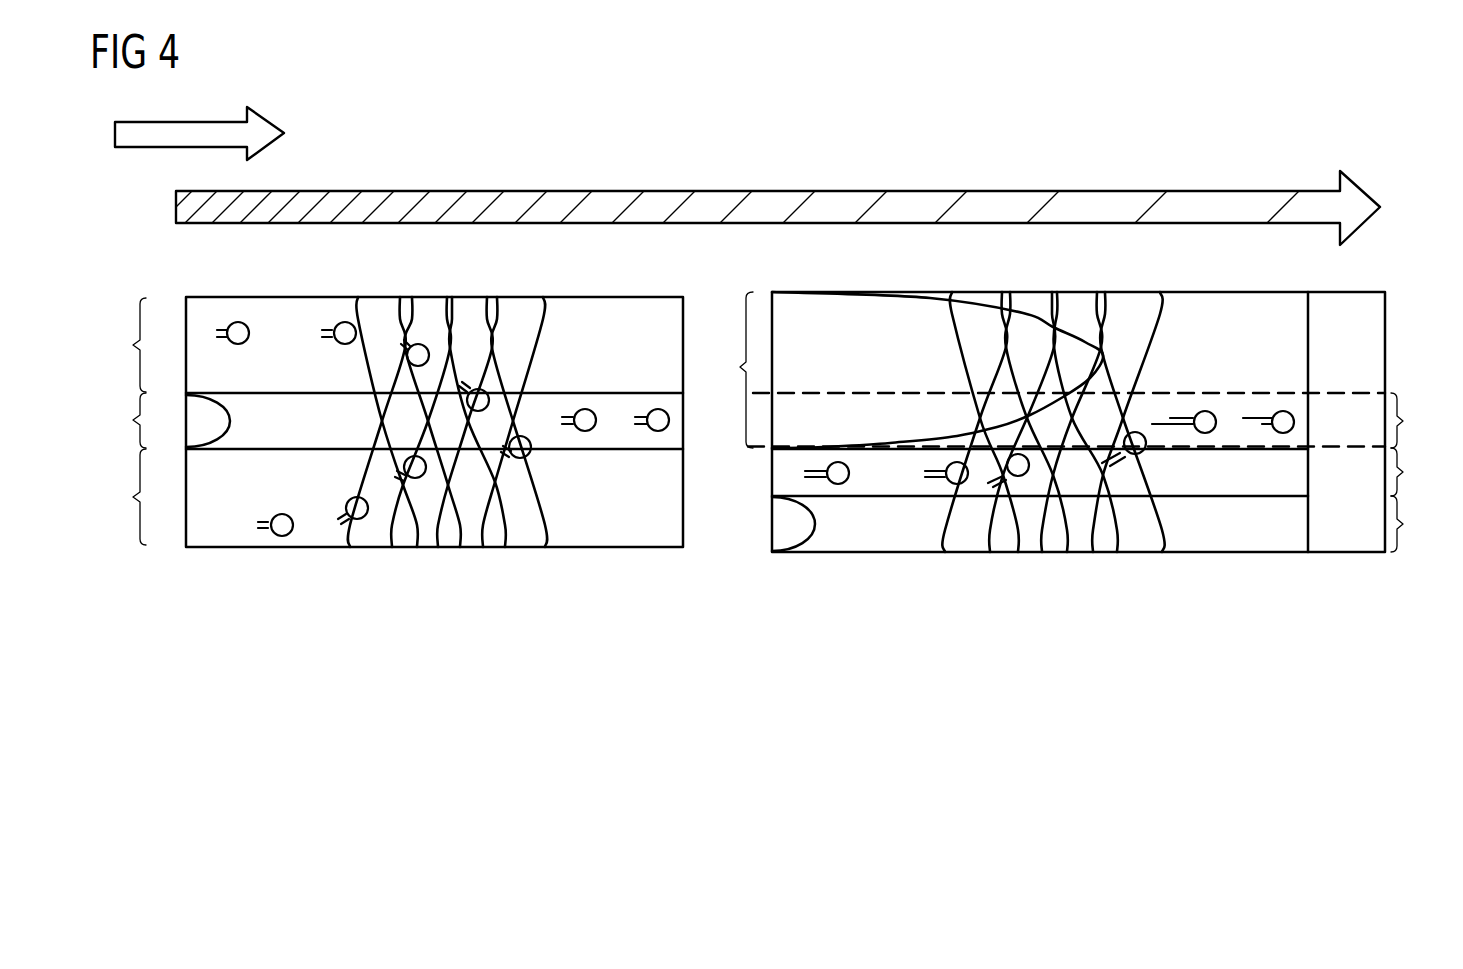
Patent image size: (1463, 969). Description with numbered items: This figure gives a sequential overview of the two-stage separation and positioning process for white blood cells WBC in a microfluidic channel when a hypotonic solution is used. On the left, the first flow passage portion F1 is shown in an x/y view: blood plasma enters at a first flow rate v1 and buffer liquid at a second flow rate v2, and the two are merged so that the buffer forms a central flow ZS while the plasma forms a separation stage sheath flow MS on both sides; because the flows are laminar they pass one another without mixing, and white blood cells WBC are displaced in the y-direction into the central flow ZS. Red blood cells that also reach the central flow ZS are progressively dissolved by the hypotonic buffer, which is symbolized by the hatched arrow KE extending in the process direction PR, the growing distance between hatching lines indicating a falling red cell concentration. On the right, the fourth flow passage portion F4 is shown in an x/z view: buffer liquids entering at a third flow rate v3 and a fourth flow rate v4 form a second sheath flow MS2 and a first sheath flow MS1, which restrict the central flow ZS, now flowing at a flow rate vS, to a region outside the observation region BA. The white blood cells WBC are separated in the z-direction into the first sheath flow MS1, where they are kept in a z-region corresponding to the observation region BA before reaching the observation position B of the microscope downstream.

The process direction PR is at (150, 149).
The arrow symbolizing red blood cell concentration KE is at (743, 190).
The observation position B is at (1361, 300).
The first flow passage portion F1 is at (600, 548).
The fourth flow passage portion F4 is at (1265, 553).
The separation stage sheath flow MS is at (385, 421).
The central flow ZS is at (1235, 515).
The first flow rate v1 is at (260, 429).
The second flow rate v2 is at (191, 421).
The white blood cells WBC is at (582, 408).
The observation region BA is at (1094, 420).
The first sheath flow MS1 is at (723, 370).
The second sheath flow MS2 is at (1425, 524).
The fourth flow rate v4 is at (775, 303).
The flow rate of the central flow vS is at (782, 475).
The third flow rate v3 is at (782, 525).